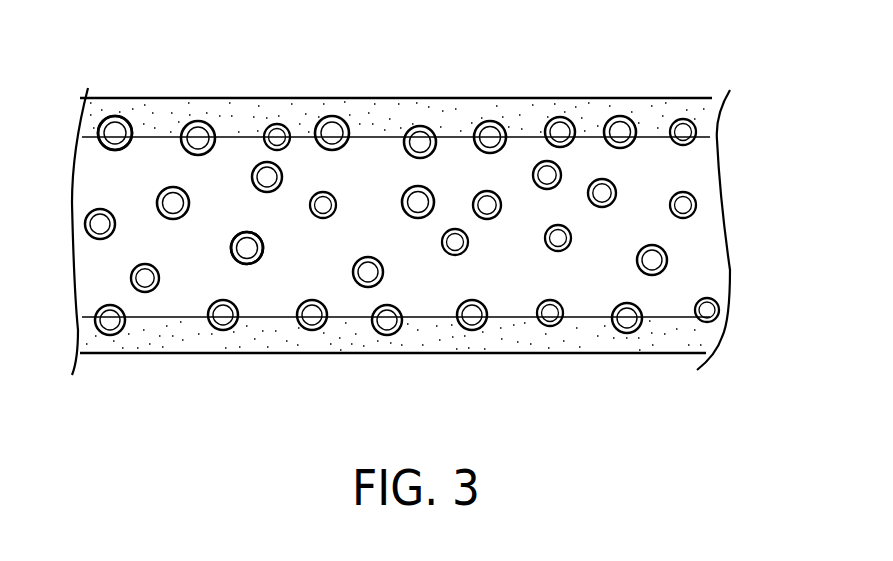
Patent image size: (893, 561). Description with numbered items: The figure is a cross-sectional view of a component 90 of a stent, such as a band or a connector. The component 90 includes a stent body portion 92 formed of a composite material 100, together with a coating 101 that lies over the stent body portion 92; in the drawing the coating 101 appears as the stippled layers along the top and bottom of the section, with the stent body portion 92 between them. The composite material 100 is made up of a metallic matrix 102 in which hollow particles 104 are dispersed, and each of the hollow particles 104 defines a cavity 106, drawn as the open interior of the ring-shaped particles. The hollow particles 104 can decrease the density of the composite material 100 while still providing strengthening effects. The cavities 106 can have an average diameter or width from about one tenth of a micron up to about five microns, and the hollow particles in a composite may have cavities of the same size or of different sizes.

The component 90 is at (452, 80).
The stent body portion 92 is at (263, 300).
The composite material 100 is at (423, 293).
The coating 101 is at (600, 110).
The metallic matrix 102 is at (233, 150).
The hollow particles 104 is at (119, 132).
The cavities 106 is at (127, 117).